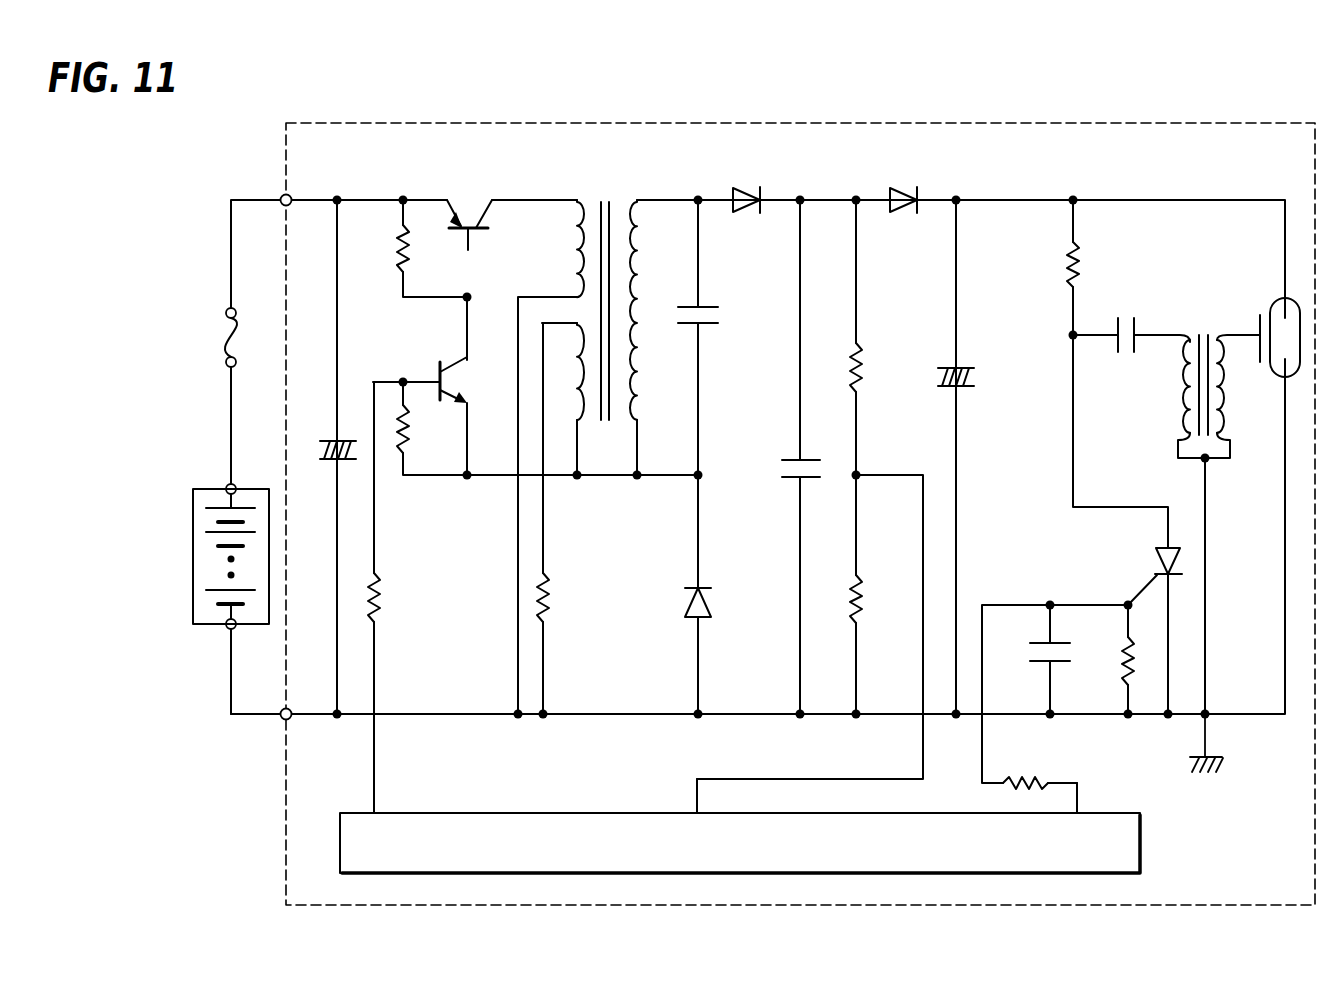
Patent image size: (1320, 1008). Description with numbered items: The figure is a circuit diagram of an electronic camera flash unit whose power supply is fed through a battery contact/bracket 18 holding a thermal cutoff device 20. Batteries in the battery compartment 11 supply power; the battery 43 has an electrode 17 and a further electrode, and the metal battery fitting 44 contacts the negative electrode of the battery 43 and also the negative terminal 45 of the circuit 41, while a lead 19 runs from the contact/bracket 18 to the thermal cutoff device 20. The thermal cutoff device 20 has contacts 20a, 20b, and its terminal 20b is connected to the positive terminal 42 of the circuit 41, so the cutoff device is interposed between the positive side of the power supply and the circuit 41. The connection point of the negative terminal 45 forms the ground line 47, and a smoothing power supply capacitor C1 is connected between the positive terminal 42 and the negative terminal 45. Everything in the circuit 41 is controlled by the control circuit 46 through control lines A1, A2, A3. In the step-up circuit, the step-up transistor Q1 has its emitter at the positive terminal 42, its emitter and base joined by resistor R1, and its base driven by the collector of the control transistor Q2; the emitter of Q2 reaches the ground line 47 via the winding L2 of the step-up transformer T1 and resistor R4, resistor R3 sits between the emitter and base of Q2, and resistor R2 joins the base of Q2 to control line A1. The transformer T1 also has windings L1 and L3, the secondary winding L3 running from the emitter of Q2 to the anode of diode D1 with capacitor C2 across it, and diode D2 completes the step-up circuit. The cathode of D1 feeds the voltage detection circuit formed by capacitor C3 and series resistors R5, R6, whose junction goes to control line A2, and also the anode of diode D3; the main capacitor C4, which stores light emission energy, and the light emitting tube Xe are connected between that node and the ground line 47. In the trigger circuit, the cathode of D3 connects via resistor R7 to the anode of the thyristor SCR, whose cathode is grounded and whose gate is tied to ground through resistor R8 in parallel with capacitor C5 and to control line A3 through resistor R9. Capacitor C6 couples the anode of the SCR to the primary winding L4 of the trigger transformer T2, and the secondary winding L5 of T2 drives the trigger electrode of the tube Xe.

The battery compartment 11 is at (193, 552).
The battery cell electrode 17 is at (228, 515).
The battery contact/bracket 18 is at (227, 486).
The lead wire 19 is at (231, 423).
The thermal cutoff device 20 is at (220, 343).
The switch contact 20a is at (225, 361).
The terminal of thermal cutoff device 20b is at (225, 314).
The circuit portion 41 is at (385, 122).
The positive terminal 42 is at (282, 196).
The battery 43 is at (228, 593).
The metal battery fitting 44 is at (227, 628).
The negative terminal 45 is at (284, 719).
The control circuit 46 is at (1142, 843).
The ground line 47 is at (247, 716).
The step-up transistor Q1 is at (469, 211).
The control transistor Q2 is at (470, 380).
The resistor R1 is at (421, 251).
The resistor R2 is at (395, 597).
The resistor R3 is at (421, 417).
The resistor R4 is at (564, 597).
The resistor R5 is at (876, 367).
The resistor R6 is at (876, 599).
The resistor R7 is at (1051, 264).
The resistor R8 is at (1107, 661).
The resistor R9 is at (1025, 766).
The smoothing power supply capacitor C1 is at (328, 457).
The capacitor C2 is at (715, 317).
The capacitor C3 is at (783, 468).
The main capacitor C4 is at (974, 379).
The capacitor C5 is at (1032, 651).
The capacitor C6 is at (1127, 319).
The diode D1 is at (749, 183).
The diode D2 is at (719, 605).
The diode D3 is at (906, 183).
The step-up transformer T1 is at (606, 293).
The trigger transformer T2 is at (1203, 369).
The winding L1 is at (562, 248).
The primary winding L2 is at (565, 371).
The secondary winding L3 is at (651, 310).
The primary winding L4 is at (1165, 386).
The secondary winding L5 is at (1241, 386).
The thyristor SCR is at (1133, 576).
The light emitting tube Xe is at (1272, 323).
The control line A1 is at (374, 772).
The control line A2 is at (697, 790).
The control line A3 is at (1079, 799).